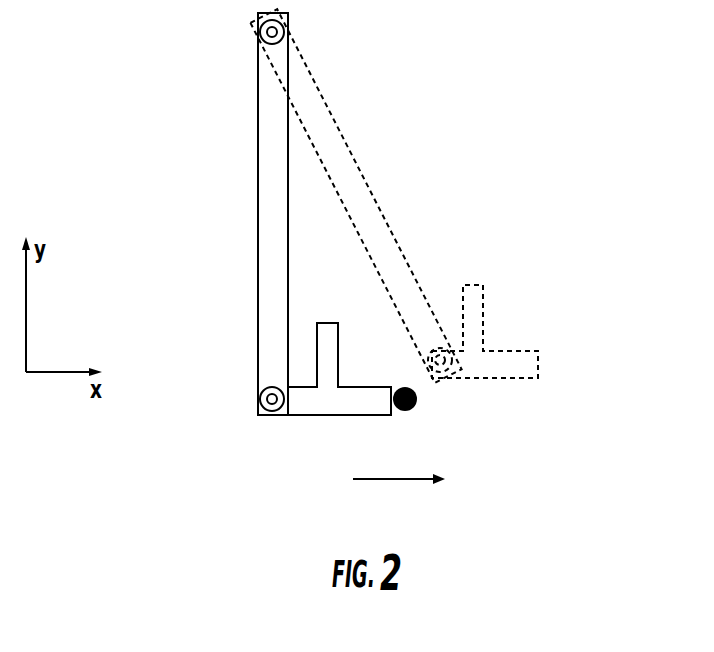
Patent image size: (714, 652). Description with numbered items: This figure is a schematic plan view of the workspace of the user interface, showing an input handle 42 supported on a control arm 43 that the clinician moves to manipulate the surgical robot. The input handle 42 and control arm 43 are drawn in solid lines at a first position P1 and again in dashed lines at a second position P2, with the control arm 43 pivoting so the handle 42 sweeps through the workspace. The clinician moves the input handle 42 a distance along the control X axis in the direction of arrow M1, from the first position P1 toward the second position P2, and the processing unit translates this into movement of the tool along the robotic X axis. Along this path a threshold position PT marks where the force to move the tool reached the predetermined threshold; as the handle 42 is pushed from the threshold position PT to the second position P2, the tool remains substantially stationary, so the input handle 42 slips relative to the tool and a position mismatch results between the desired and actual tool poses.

The control arm 43 is at (249, 236).
The input handle 42 is at (317, 403).
The threshold position PT is at (405, 411).
The first position P1 is at (291, 240).
The second position P2 is at (508, 278).
The arrow M1 is at (399, 500).